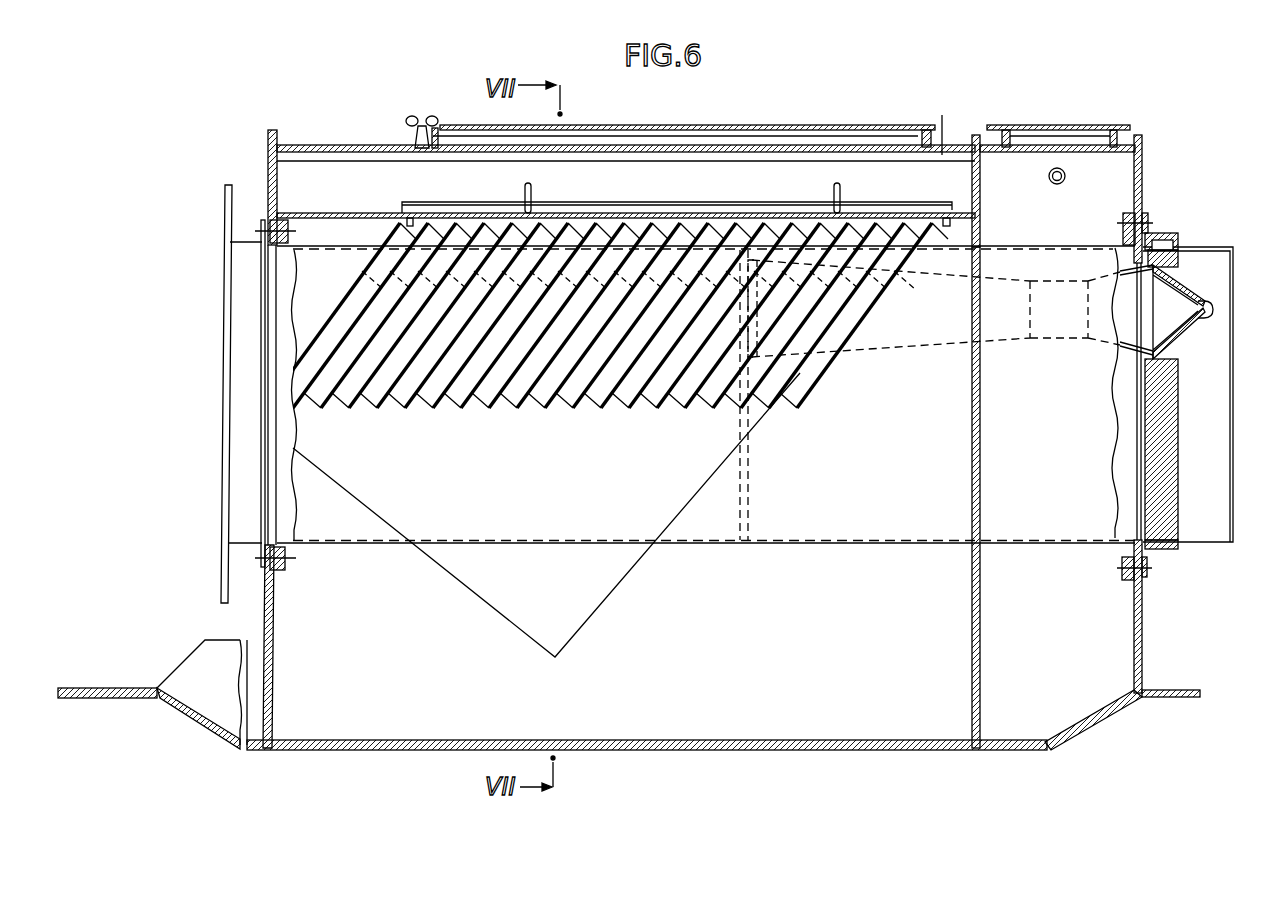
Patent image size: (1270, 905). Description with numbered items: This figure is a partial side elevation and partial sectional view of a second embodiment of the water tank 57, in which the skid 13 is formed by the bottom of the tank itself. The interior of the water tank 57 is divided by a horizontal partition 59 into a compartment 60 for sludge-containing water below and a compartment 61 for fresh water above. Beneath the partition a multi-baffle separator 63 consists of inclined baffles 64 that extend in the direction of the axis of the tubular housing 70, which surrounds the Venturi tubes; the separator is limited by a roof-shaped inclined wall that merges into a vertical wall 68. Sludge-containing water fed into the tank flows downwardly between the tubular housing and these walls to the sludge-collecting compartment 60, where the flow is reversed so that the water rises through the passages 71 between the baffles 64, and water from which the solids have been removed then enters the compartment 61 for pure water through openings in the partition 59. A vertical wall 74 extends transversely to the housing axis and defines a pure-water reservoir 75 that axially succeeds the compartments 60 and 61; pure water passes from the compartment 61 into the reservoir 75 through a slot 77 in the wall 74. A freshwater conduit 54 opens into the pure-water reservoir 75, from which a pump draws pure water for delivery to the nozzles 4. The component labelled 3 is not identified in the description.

The fan outline 3 is at (1008, 323).
The nozzles 4 is at (1199, 312).
The skid 13 is at (882, 745).
The freshwater conduit 54 is at (1066, 177).
The water tank 57 is at (262, 617).
The horizontal partition 59 is at (343, 213).
The compartment for sludge-containing water 60 is at (718, 665).
The compartment for fresh water 61 is at (654, 188).
The multi-baffle separator 63 is at (535, 373).
The inclined baffles 64 is at (592, 385).
The vertical wall 68 is at (687, 487).
The tubular housing 70 is at (823, 503).
The passages 71 is at (408, 392).
The vertical wall 74 is at (971, 632).
The pure-water reservoir 75 is at (1064, 657).
The slot 77 is at (980, 182).